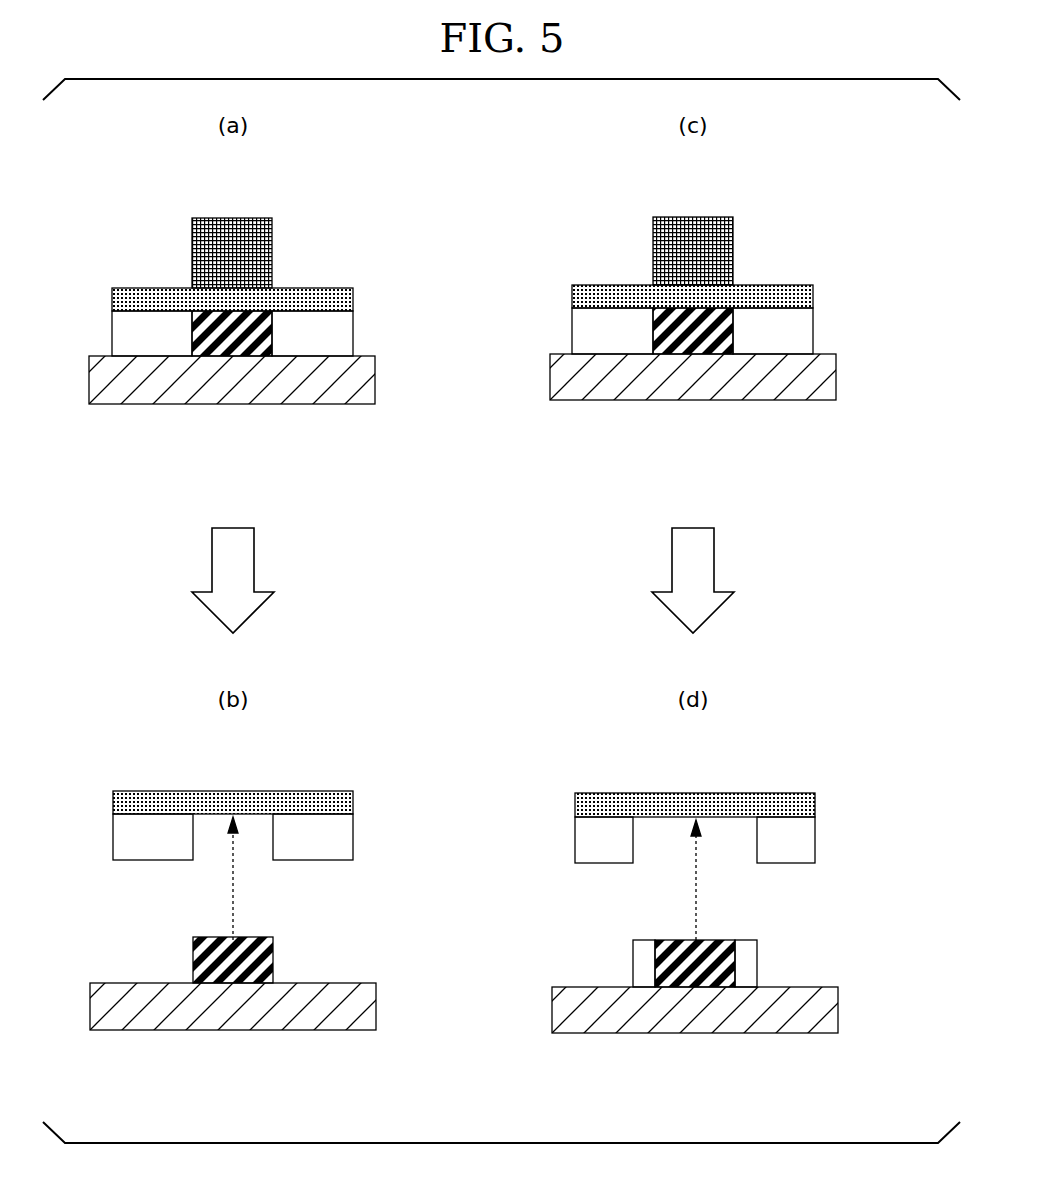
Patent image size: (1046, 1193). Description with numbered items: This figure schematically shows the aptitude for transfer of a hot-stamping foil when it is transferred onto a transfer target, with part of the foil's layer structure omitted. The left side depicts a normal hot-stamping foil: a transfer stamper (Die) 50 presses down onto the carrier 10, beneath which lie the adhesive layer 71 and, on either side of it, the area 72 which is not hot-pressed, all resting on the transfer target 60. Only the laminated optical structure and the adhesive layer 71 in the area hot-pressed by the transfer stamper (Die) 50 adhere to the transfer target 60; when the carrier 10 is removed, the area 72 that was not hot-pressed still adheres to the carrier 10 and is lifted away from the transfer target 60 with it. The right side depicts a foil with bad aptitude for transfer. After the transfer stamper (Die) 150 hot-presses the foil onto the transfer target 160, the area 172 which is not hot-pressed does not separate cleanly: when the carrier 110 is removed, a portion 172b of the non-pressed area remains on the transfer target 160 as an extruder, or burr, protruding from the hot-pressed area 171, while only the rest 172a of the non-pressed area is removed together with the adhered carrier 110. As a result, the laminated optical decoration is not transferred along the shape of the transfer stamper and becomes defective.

The carrier 10 is at (340, 300).
The transfer stamper (Die) 50 is at (267, 252).
The transfer target 60 is at (358, 382).
The adhesive layer 71 is at (265, 335).
The area which is not hot-pressed 72 is at (162, 325).
The carrier 110 is at (800, 300).
The transfer stamper (Die) 150 is at (727, 252).
The transfer target 160 is at (818, 382).
The area which is hot-pressed 171 is at (725, 335).
The area which is not hot-pressed 172 is at (622, 325).
The rest of the area which is not hot-pressed 172a is at (612, 832).
The portion of the area which is not hot-pressed 172b is at (638, 967).